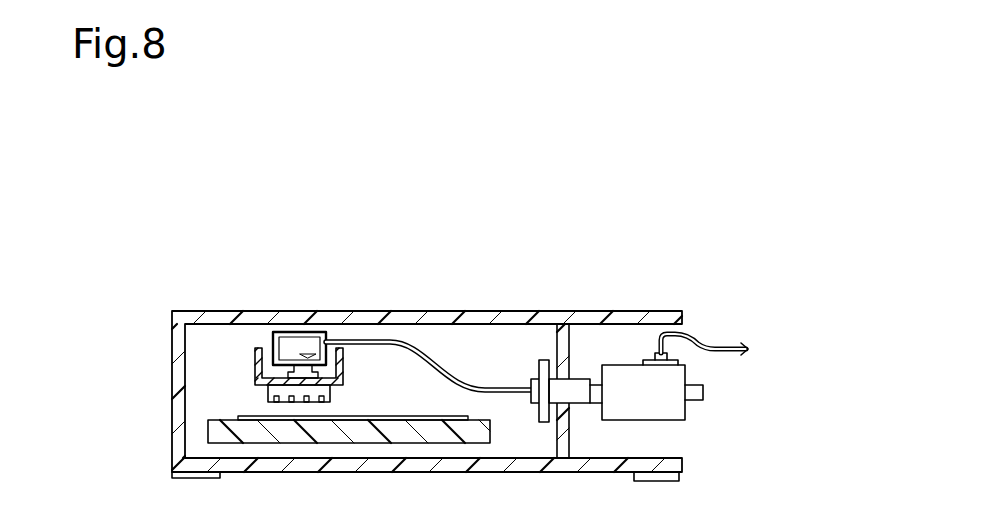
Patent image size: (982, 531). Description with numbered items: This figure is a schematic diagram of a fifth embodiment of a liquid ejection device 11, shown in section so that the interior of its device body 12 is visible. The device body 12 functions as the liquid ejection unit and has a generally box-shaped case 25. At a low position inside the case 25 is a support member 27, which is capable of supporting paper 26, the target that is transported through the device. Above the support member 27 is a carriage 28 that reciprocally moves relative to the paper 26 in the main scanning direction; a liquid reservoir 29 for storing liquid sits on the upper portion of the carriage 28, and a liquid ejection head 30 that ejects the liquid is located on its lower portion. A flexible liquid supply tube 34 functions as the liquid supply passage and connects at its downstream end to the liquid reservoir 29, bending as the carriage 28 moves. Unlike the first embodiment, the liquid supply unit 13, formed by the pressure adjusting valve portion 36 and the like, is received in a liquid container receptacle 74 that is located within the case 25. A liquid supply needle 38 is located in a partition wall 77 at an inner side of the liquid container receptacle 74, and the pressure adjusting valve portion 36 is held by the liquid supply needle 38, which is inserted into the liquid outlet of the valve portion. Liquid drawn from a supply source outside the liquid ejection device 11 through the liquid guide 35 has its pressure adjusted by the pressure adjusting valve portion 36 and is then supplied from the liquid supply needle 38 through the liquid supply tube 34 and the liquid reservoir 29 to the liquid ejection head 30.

The liquid ejection device 11 is at (377, 176).
The device body 12 is at (258, 254).
The liquid supply unit 13 is at (768, 353).
The case 25 is at (198, 311).
The paper 26 is at (370, 416).
The support member 27 is at (480, 418).
The carriage 28 is at (255, 370).
The liquid reservoir 29 is at (309, 332).
The liquid ejection head 30 is at (268, 393).
The liquid supply tube 34 is at (445, 355).
The liquid guide 35 is at (714, 352).
The pressure adjusting valve portion 36 is at (703, 392).
The liquid supply needle 38 is at (585, 395).
The liquid container receptacle 74 is at (665, 455).
The partition wall 77 is at (568, 312).